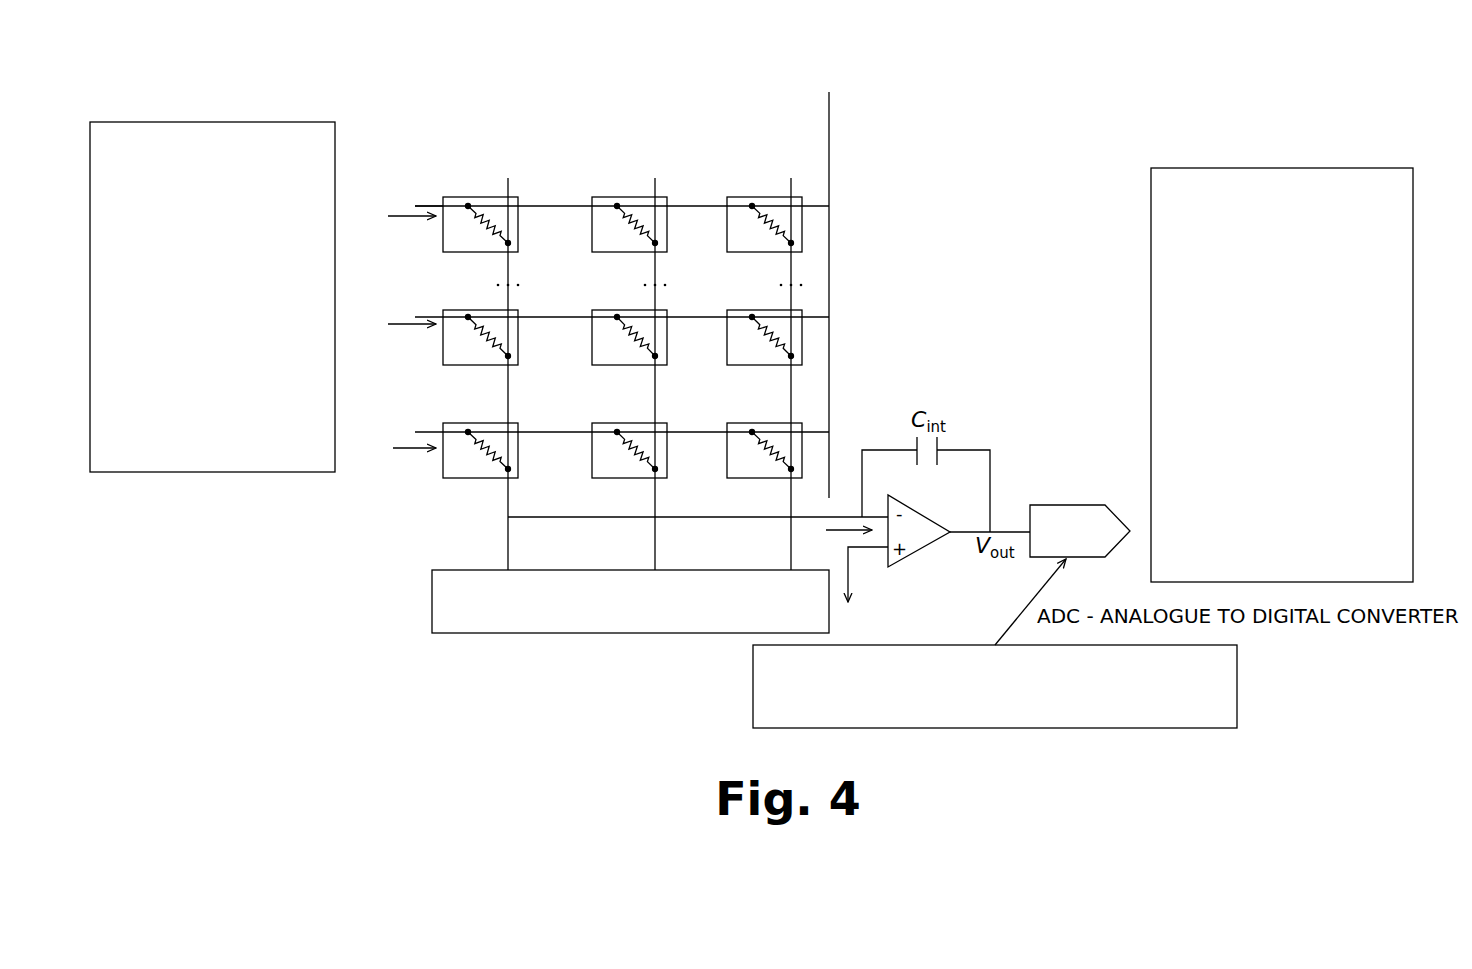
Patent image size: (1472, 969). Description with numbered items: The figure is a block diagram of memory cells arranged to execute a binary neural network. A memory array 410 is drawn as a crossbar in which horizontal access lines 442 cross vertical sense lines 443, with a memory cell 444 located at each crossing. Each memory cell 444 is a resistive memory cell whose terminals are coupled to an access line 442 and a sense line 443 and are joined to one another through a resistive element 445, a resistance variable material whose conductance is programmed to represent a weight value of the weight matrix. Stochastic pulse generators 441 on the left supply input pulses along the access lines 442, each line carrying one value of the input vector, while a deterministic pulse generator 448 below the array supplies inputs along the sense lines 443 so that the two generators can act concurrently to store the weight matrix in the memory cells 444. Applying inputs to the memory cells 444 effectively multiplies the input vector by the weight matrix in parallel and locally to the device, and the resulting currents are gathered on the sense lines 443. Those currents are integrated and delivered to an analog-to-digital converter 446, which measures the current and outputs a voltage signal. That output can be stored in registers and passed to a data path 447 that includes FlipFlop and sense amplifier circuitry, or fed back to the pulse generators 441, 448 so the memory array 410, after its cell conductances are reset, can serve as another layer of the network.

The memory array 410 is at (690, 82).
The stochastic pulse generator 441 is at (240, 122).
The access line 442 is at (443, 197).
The sense line 443 is at (510, 182).
The memory cell 444 is at (490, 197).
The resistive element 445 is at (506, 245).
The analog-to-digital converter 446 is at (1072, 505).
The data path 447 is at (1272, 168).
The deterministic pulse generator 448 is at (432, 605).